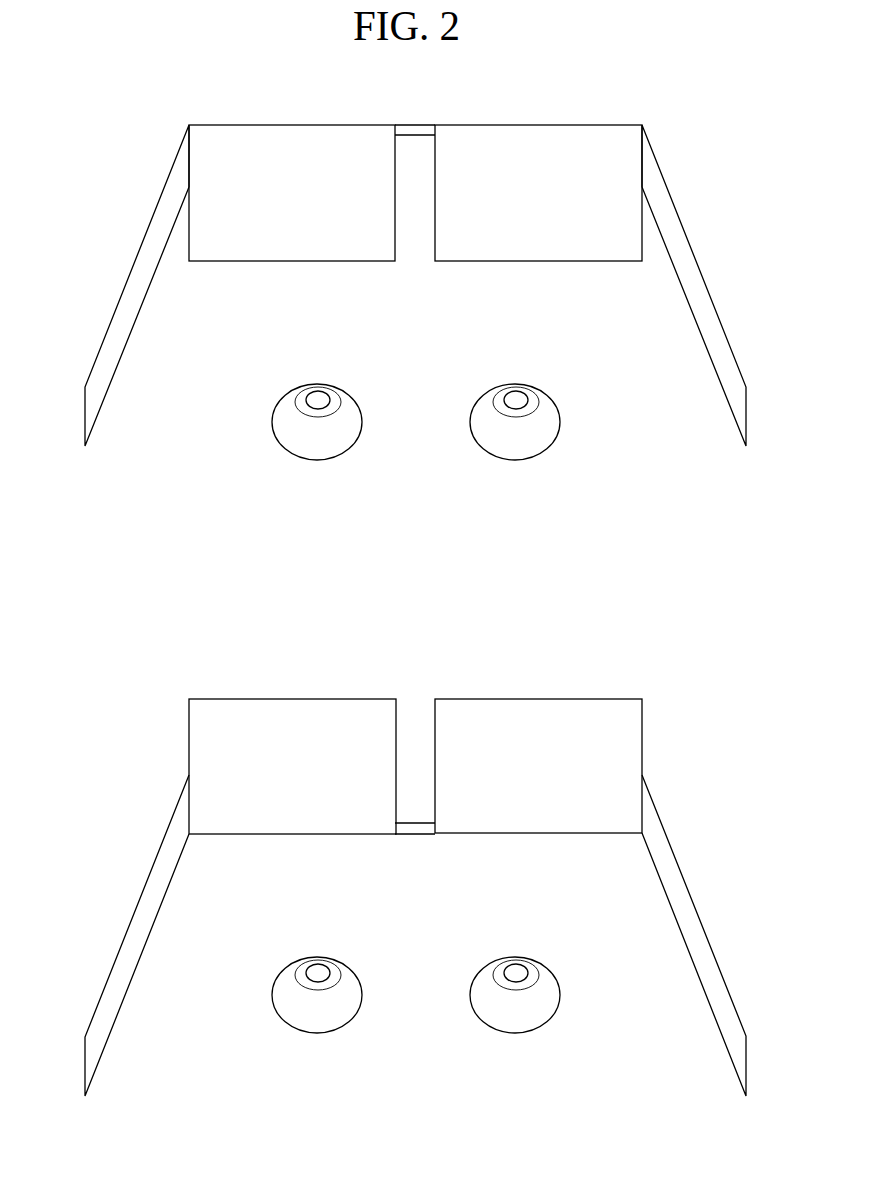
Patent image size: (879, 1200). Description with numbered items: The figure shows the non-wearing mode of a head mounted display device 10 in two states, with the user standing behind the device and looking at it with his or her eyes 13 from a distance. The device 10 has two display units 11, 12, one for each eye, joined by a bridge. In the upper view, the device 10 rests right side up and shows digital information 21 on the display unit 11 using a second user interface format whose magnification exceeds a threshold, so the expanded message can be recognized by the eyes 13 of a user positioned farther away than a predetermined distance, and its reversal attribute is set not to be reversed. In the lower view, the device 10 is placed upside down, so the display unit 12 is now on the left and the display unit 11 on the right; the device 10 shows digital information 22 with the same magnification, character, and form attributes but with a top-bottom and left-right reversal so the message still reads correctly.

The head mounted display device 10 is at (746, 417).
The display unit 11 is at (343, 145).
The display unit 12 is at (537, 145).
The eyes 13 is at (500, 437).
The digital information 21 is at (213, 190).
The digital information 22 is at (618, 762).